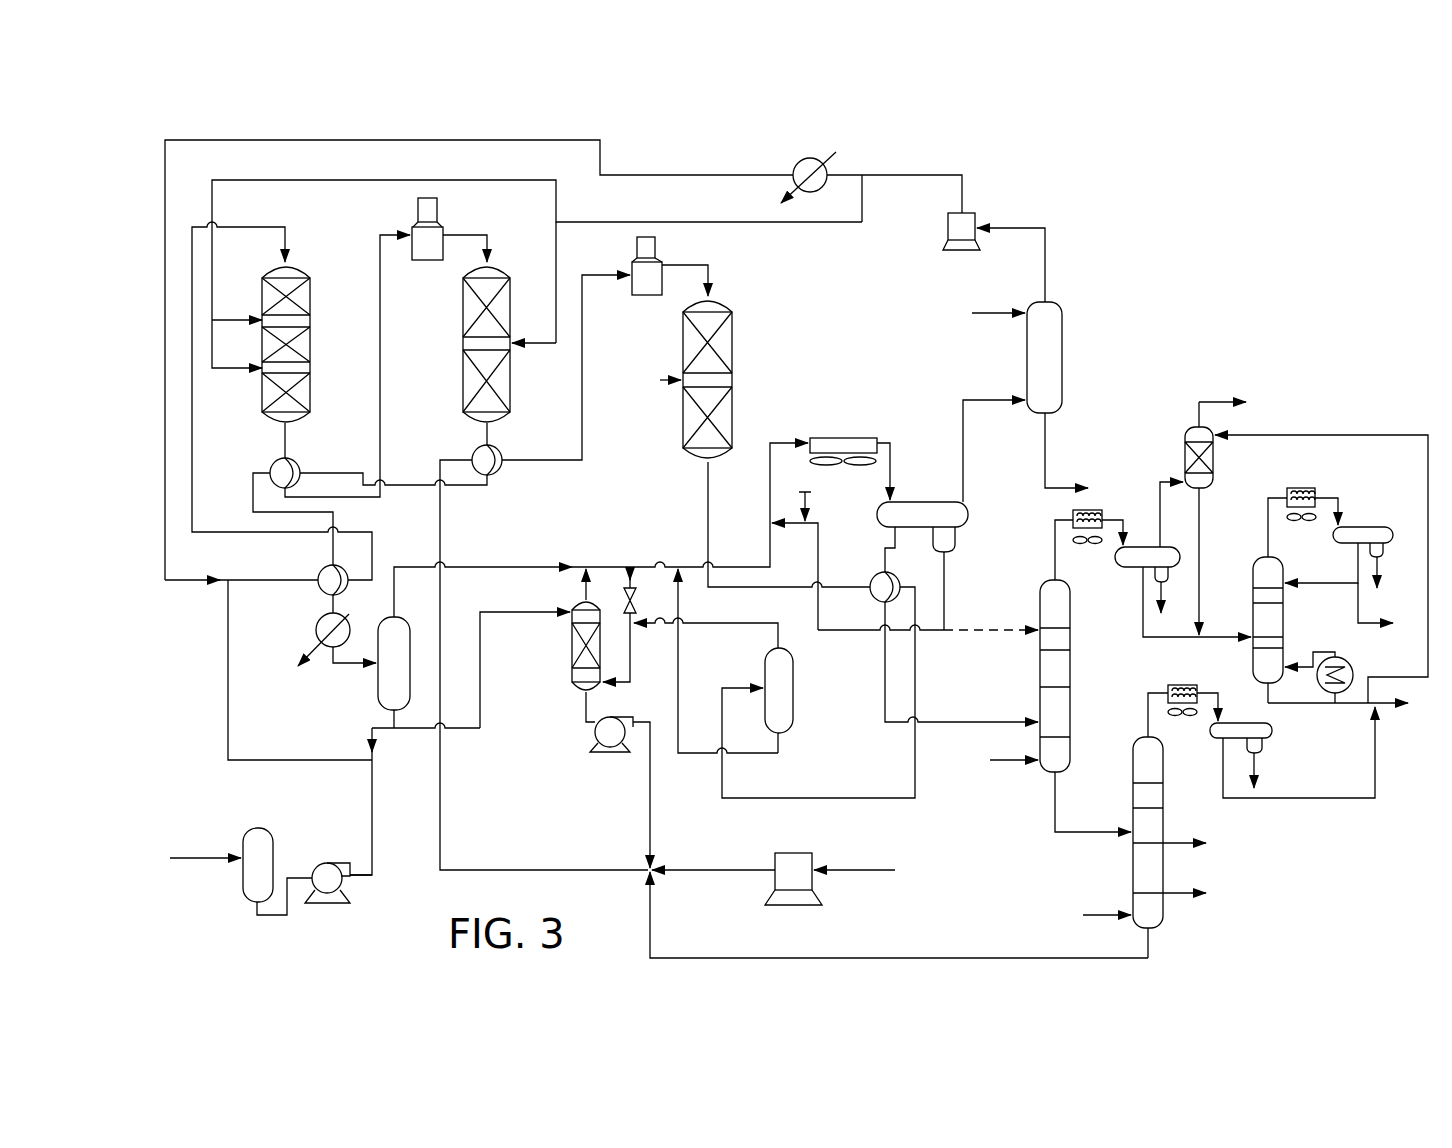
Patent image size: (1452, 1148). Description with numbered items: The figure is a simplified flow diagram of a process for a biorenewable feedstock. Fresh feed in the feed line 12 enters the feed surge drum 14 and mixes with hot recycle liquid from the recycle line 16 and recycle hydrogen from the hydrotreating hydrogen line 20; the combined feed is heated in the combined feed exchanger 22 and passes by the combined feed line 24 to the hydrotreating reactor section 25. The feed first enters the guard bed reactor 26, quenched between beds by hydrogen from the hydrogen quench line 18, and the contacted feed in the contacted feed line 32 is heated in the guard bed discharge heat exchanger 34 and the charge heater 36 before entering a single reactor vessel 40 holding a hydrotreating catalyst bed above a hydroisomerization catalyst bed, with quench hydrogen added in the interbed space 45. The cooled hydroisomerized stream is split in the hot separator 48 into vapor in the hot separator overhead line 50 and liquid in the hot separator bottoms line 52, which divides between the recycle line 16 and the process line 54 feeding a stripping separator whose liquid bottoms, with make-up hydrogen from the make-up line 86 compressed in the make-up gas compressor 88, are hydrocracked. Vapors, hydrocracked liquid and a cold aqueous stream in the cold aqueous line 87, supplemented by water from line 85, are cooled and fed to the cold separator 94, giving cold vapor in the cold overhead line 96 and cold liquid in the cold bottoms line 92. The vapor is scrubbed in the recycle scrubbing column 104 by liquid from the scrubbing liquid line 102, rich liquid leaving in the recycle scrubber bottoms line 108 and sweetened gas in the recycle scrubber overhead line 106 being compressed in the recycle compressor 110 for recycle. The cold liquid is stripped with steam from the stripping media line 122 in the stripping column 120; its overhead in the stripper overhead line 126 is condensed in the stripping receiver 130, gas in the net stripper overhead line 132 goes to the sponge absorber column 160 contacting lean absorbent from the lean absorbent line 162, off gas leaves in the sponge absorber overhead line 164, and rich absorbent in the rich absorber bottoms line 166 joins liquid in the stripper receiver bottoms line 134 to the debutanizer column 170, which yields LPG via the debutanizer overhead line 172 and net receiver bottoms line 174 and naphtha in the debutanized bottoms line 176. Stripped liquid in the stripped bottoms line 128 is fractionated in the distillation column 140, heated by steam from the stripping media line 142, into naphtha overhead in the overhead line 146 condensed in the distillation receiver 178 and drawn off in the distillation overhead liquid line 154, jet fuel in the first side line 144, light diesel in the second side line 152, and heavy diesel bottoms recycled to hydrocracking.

The feed line 12 is at (180, 857).
The feed surge drum 14 is at (244, 828).
The recycle line 16 is at (384, 732).
The hydrogen quench line 18 is at (665, 222).
The hydrotreating hydrogen line 20 is at (318, 140).
The combined feed exchanger 22 is at (336, 568).
The combined feed line 24 is at (265, 582).
The hydrotreating reactor section 25 is at (235, 120).
The guard bed reactor 26 is at (294, 264).
The contacted feed line 32 is at (285, 438).
The guard bed discharge heat exchanger 34 is at (270, 467).
The charge heater 36 is at (414, 225).
The hydrotreating/hydroisomerization reactor vessel 40 is at (503, 269).
The interbed space 45 is at (463, 343).
The hot separator 48 is at (377, 688).
The hot separator overhead line 50 is at (507, 565).
The hot separator bottoms line 52 is at (386, 723).
The process line 54 is at (490, 597).
The water line 85 is at (808, 493).
The make-up line 86 is at (866, 870).
The cold aqueous line 87 is at (944, 580).
The make-up gas compressor 88 is at (790, 853).
The cold bottoms line 92 is at (885, 549).
The cold separator 94 is at (968, 518).
The cold overhead line 96 is at (963, 486).
The scrubbing liquid line 102 is at (987, 314).
The recycle scrubbing column 104 is at (1062, 330).
The recycle scrubber overhead line 106 is at (1045, 238).
The recycle scrubber bottoms line 108 is at (1045, 436).
The recycle compressor 110 is at (947, 228).
The stripping column 120 is at (1040, 580).
The stripping media line 122 is at (992, 760).
The stripper overhead line 126 is at (1055, 576).
The stripped bottoms line 128 is at (1055, 806).
The stripping receiver 130 is at (1130, 547).
The net stripper overhead line 132 is at (1154, 490).
The stripper receiver bottoms line 134 is at (1143, 603).
The distillation column 140 is at (1133, 740).
The stripping media line 142 is at (1083, 915).
The first side line 144 is at (1185, 843).
The overhead line 146 is at (1148, 693).
The second side line 152 is at (1175, 893).
The distillation overhead liquid line 154 is at (1288, 798).
The sponge absorber column 160 is at (1185, 430).
The lean absorbent line 162 is at (1273, 435).
The sponge absorber overhead line 164 is at (1210, 402).
The rich absorber bottoms line 166 is at (1199, 586).
The debutanizer column 170 is at (1254, 560).
The debutanizer overhead line 172 is at (1268, 554).
The net receiver bottoms line 174 is at (1359, 596).
The debutanized bottoms line 176 is at (1317, 704).
The distillation receiver 178 is at (1238, 723).